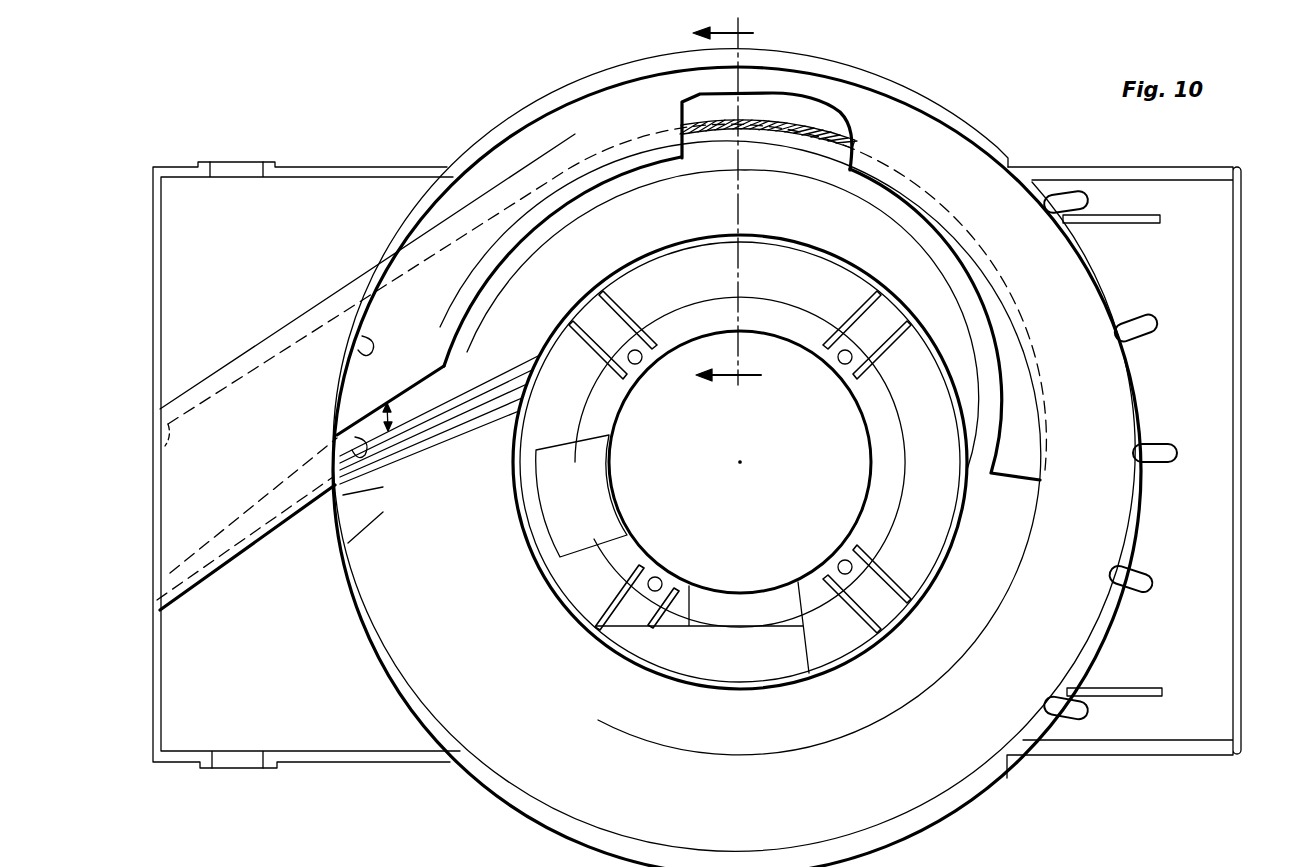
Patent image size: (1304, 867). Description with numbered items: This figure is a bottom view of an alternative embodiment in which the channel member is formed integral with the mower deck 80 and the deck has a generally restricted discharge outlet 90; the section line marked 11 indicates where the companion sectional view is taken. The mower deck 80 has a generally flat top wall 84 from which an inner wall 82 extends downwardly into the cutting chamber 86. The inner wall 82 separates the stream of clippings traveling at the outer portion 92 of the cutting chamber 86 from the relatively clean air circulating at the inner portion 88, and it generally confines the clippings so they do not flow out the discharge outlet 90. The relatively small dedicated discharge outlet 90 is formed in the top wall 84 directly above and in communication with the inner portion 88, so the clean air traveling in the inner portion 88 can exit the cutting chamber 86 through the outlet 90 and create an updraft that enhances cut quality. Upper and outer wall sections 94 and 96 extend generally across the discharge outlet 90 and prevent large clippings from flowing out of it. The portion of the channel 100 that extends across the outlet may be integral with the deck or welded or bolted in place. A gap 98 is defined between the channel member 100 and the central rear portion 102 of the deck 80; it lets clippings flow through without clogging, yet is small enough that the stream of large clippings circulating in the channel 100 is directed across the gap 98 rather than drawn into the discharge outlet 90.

The mower deck 80 is at (962, 102).
The inner wall 82 is at (812, 138).
The top wall 84 is at (1078, 590).
The cutting chamber 86 is at (1052, 639).
The inner portion 88 is at (860, 224).
The discharge outlet 90 is at (150, 450).
The outer portion 92 is at (912, 138).
The upper wall section 94 is at (385, 372).
The outer wall section 96 is at (356, 350).
The gap 98 is at (396, 420).
The channel member 100 is at (498, 269).
The central rear portion 102 is at (367, 472).
The section line 11- 11 is at (711, 202).